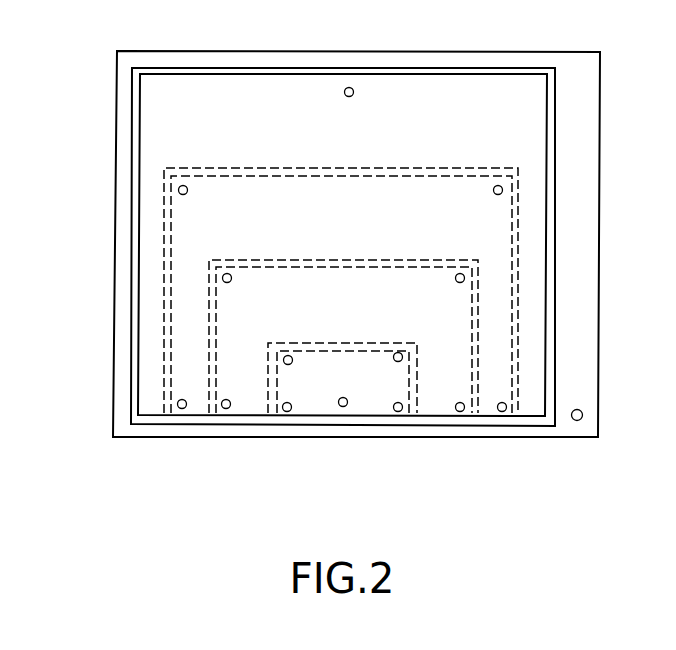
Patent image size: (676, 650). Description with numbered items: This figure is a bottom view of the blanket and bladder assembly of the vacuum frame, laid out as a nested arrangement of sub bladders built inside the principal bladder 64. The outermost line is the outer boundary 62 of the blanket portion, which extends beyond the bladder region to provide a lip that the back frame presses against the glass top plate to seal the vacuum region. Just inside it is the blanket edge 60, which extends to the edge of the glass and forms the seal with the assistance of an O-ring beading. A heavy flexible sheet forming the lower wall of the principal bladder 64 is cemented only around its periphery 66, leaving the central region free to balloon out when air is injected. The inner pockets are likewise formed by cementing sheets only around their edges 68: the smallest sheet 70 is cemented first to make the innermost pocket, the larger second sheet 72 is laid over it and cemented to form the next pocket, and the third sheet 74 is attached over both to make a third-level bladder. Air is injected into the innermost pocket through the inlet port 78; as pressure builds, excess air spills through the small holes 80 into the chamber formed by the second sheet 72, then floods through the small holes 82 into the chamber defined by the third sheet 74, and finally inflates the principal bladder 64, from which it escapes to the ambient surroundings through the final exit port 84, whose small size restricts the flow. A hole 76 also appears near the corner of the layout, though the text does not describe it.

The edge of the pressure blanket 60 is at (583, 166).
The outer boundary 62 is at (556, 214).
The principal bladder 64 is at (233, 97).
The periphery of the lower wall 66 is at (556, 307).
The edges of the inner bladder pockets 68 is at (160, 308).
The smallest sheet 70 is at (375, 390).
The second sheet 72 is at (442, 403).
The third sheet 74 is at (187, 366).
The corner hole 76 is at (585, 415).
The inlet port 78 is at (340, 406).
The small holes 80 is at (288, 412).
The small holes 82 is at (467, 277).
The final exit port 84 is at (355, 95).